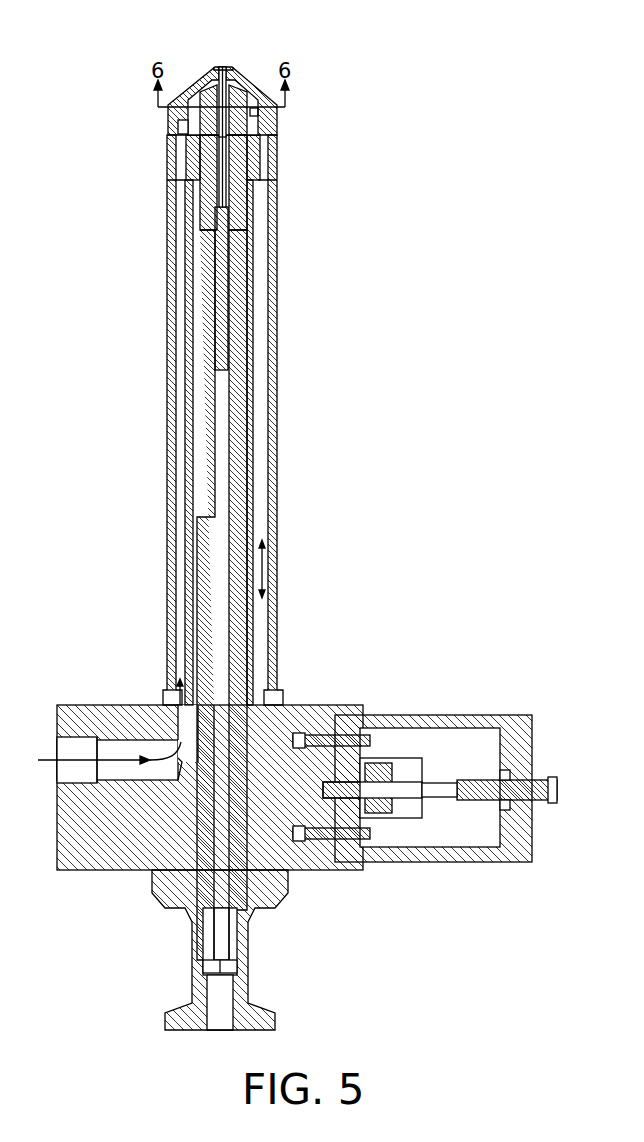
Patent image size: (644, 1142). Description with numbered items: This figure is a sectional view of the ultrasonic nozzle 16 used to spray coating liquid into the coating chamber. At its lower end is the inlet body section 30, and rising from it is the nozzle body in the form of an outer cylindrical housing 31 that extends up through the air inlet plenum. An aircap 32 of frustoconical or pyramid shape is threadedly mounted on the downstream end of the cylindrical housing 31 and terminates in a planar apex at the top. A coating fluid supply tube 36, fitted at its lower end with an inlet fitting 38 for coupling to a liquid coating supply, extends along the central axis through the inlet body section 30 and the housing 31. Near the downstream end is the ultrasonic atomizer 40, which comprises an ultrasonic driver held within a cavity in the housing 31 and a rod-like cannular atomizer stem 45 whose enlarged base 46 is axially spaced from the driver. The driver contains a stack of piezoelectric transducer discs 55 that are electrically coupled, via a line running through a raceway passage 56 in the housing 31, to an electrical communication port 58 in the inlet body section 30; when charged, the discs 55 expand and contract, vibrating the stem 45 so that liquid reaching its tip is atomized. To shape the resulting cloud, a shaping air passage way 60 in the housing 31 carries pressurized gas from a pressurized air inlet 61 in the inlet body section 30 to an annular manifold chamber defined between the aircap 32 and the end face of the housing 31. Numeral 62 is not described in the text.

The ultrasonic nozzle 16 is at (294, 394).
The inlet body section 30 is at (105, 865).
The outer cylindrical housing 31 is at (278, 443).
The aircap 32 is at (257, 90).
The coating fluid supply tube 36 is at (244, 525).
The inlet fitting 38 is at (248, 948).
The ultrasonic atomizer 40 is at (197, 190).
The cannular atomizer stem 45 is at (178, 127).
The enlarged base 46 is at (252, 112).
The piezoelectric transducer discs 55 is at (268, 155).
The raceway passage 56 is at (263, 362).
The electrical communication port 58 is at (540, 778).
The shaping air passage way 60 is at (180, 455).
The pressurized air inlet 61 is at (194, 83).
The outlet orifice 62 is at (209, 102).